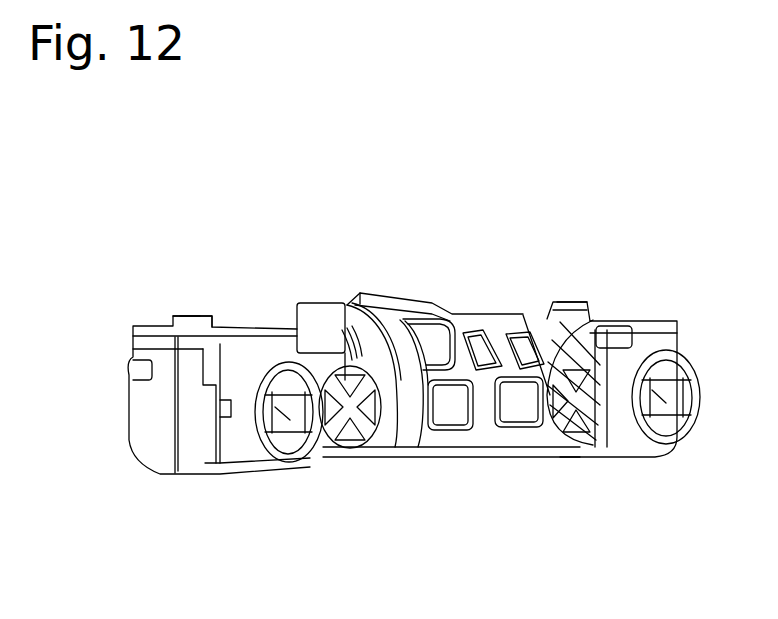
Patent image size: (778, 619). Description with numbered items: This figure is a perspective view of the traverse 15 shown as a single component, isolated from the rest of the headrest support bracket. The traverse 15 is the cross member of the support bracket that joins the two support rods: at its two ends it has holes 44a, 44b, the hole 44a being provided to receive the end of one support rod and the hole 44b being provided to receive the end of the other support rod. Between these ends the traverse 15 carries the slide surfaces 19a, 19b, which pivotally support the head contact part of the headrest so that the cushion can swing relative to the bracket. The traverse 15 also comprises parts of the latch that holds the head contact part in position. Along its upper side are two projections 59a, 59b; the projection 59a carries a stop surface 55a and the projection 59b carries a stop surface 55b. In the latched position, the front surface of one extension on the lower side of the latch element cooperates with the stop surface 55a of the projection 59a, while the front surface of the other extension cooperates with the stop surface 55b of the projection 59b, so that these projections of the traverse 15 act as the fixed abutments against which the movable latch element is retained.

The traverse 15 is at (192, 443).
The hole 44a is at (700, 410).
The hole 44b is at (340, 445).
The slide surface 19a is at (577, 440).
The slide surface 19b is at (347, 450).
The stop surface 55a is at (590, 312).
The stop surface 55b is at (214, 318).
The projection 59a is at (186, 308).
The projection 59b is at (561, 293).